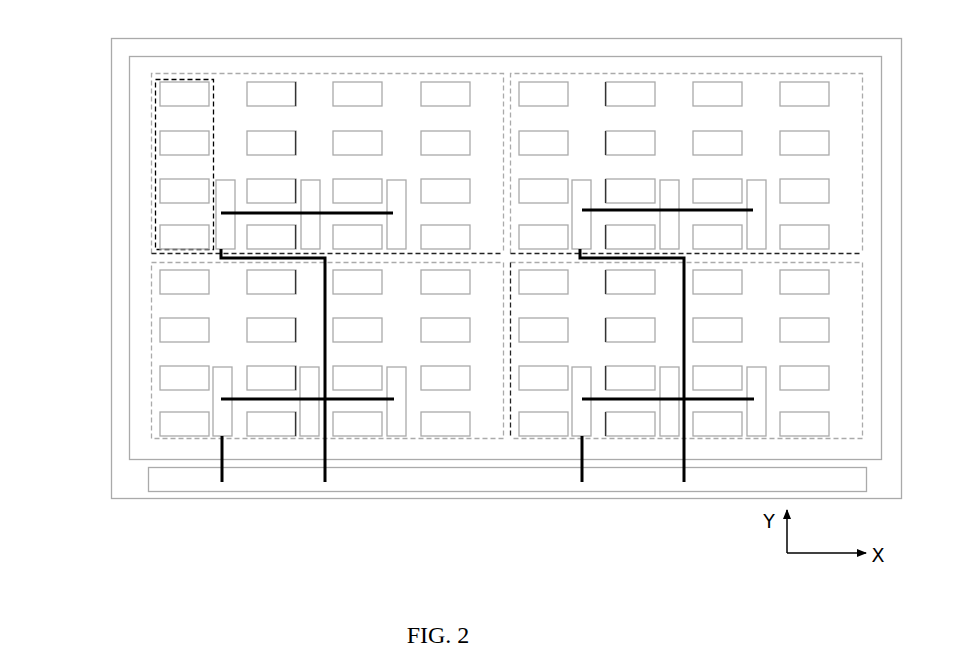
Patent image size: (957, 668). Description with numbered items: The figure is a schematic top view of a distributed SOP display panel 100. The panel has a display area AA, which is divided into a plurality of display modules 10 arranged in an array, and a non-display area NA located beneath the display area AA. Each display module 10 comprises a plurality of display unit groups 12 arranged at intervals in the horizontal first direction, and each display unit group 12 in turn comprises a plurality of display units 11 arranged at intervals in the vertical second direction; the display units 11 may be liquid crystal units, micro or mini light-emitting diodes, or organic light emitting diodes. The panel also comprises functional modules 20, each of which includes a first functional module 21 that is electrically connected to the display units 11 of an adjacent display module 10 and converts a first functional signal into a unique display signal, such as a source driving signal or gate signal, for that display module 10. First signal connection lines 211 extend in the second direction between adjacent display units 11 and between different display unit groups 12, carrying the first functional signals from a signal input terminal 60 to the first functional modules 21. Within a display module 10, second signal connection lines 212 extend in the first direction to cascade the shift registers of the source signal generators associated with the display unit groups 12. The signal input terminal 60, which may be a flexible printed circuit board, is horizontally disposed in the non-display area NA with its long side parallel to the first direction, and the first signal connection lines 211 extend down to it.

The distributed SOP display panel 100 is at (468, 250).
The display module 10 is at (456, 220).
The display unit 11 is at (168, 97).
The display unit group 12 is at (144, 126).
The functional module 20 is at (487, 400).
The first functional module 21 is at (665, 417).
The first signal connection line 211 is at (328, 450).
The second signal connection line 212 is at (239, 400).
The signal input terminal 60 is at (443, 482).
The display area AA is at (155, 450).
The non-display area NA is at (137, 478).